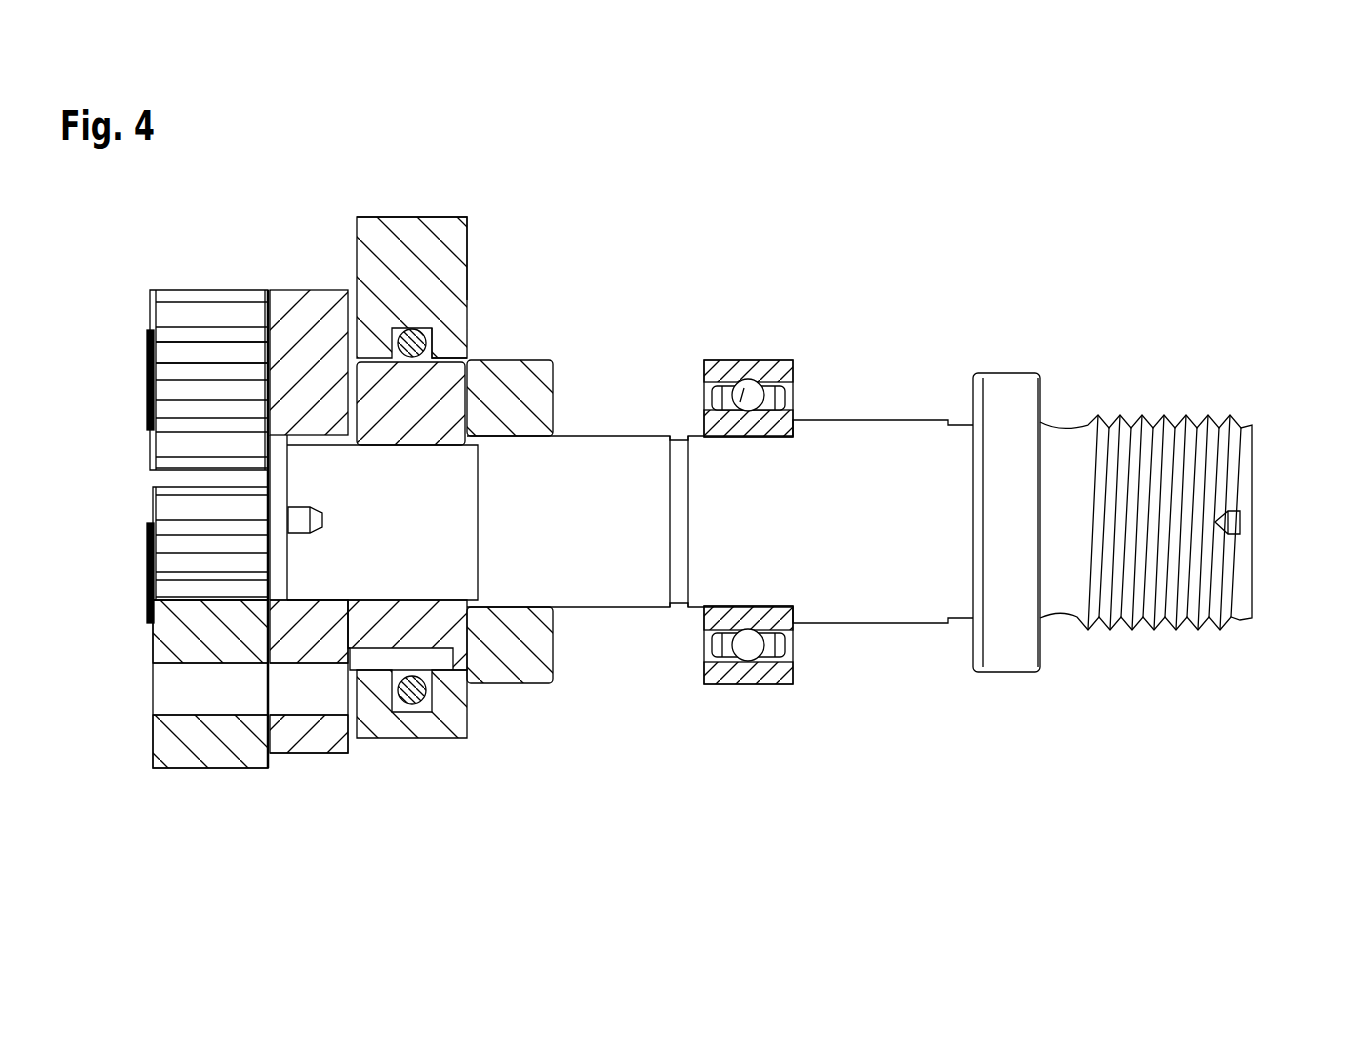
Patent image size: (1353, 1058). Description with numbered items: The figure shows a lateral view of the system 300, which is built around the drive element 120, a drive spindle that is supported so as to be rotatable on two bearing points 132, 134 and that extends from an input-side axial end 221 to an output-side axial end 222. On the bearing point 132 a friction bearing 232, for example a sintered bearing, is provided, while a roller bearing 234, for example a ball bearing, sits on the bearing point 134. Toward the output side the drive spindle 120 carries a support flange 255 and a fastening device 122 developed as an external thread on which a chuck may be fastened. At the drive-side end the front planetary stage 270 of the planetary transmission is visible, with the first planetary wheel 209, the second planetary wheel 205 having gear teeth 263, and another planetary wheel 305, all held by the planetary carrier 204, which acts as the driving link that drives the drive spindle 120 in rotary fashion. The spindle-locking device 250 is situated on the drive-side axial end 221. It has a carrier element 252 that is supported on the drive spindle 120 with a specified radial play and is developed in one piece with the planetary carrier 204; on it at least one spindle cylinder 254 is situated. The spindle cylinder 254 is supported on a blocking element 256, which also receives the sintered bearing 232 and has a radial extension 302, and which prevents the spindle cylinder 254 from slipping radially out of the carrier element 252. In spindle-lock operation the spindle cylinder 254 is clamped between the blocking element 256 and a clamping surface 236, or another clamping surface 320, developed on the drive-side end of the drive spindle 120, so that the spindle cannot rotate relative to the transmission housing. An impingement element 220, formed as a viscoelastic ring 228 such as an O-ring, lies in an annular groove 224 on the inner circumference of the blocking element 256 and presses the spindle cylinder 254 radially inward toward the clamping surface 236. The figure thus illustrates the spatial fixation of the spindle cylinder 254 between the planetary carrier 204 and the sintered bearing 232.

The system 300 is at (118, 284).
The gear teeth 263 is at (162, 344).
The second planetary wheel 205 is at (180, 415).
The planetary wheel 305 is at (168, 570).
The first planetary wheel 209 is at (165, 640).
The front planetary stage 270 is at (268, 778).
The planetary carrier 204 is at (288, 298).
The clamping surface 320 is at (343, 603).
The input-side axial end 221 is at (270, 487).
The clamping surface 236 is at (440, 449).
The spindle-locking device 250 is at (446, 250).
The impingement element 220 is at (412, 326).
The viscoelastic ring 228 is at (452, 348).
The radial extension 302 is at (458, 244).
The spindle cylinder 254 is at (370, 381).
The friction bearing 232 is at (530, 390).
The carrier element 252 is at (474, 688).
The blocking element 256 is at (416, 753).
The groove 224 is at (414, 714).
The drive element 120 is at (905, 496).
The bearing point 132 is at (542, 441).
The roller bearing 234 is at (745, 396).
The bearing point 134 is at (778, 442).
The support flange 255 is at (1012, 378).
The fastening device 122 is at (1166, 632).
The output-side axial end 222 is at (1254, 490).